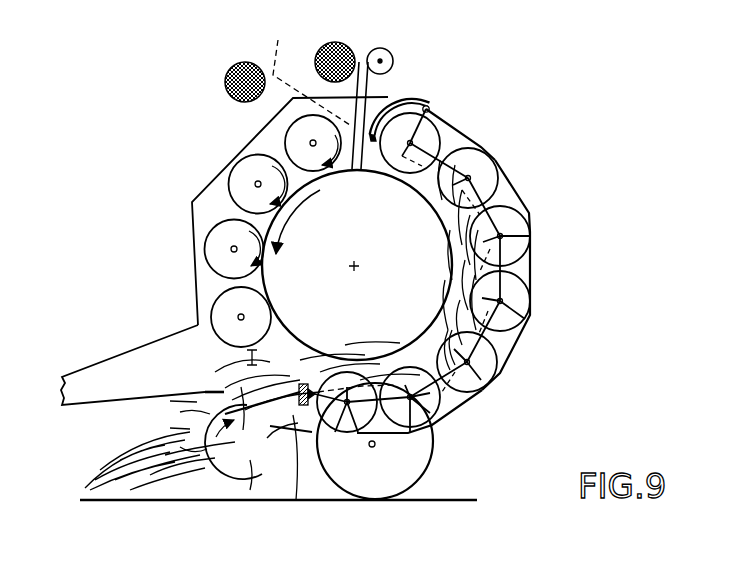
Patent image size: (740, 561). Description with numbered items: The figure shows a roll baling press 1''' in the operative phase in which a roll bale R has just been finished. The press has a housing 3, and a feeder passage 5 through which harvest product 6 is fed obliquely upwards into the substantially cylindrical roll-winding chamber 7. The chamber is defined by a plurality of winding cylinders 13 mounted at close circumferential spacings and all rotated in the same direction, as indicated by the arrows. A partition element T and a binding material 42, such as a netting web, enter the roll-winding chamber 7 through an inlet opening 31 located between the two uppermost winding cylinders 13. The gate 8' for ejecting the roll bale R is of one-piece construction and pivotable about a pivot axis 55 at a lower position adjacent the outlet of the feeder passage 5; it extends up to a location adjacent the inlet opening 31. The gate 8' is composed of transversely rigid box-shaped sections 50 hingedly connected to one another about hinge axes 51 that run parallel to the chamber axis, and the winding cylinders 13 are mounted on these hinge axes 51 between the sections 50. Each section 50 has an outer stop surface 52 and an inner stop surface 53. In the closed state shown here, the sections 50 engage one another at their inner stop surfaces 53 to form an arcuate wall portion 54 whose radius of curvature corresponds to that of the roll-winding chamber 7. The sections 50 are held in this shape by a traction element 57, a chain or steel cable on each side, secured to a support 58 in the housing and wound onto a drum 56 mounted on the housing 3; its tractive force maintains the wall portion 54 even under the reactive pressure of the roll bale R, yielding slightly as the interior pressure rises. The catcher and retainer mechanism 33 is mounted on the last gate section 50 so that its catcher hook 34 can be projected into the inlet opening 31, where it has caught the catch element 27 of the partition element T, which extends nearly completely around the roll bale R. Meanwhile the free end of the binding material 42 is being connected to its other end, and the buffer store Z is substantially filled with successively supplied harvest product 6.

The roll baling press 1''' is at (523, 115).
The housing 3 is at (206, 187).
The feeder passage 5 is at (222, 397).
The harvest product 6 is at (207, 420).
The roll-winding chamber 7 is at (245, 283).
The gate 8' is at (539, 272).
The winding cylinders 13 is at (247, 172).
The catch element 27 is at (380, 137).
The inlet opening 31 is at (360, 175).
The catcher and retainer mechanism 33 is at (438, 102).
The catcher hook 34 is at (441, 135).
The binding material 42 is at (368, 93).
The box-shaped sections 50 is at (515, 348).
The hinge axes 51 is at (432, 445).
The outer stop surface 52 is at (527, 224).
The inner stop surface 53 is at (531, 259).
The arcuate wall portion 54 is at (470, 213).
The pivot axis 55 is at (320, 432).
The drum 56 is at (224, 85).
The traction element 57 is at (311, 70).
The support 58 is at (313, 404).
The roll bale R is at (354, 318).
The partition element T is at (414, 93).
The buffer store Z is at (503, 173).